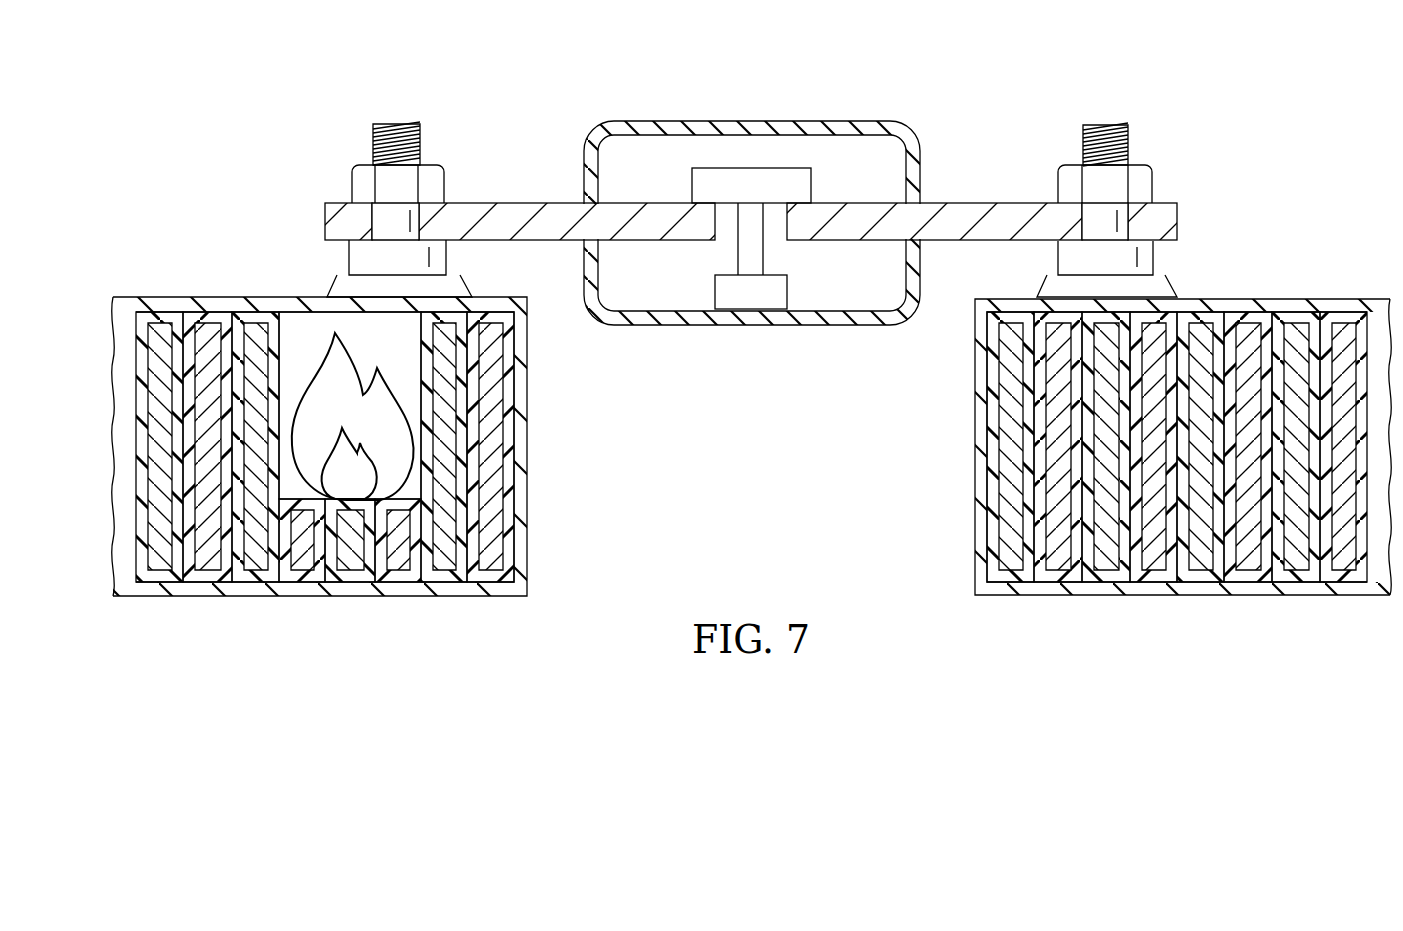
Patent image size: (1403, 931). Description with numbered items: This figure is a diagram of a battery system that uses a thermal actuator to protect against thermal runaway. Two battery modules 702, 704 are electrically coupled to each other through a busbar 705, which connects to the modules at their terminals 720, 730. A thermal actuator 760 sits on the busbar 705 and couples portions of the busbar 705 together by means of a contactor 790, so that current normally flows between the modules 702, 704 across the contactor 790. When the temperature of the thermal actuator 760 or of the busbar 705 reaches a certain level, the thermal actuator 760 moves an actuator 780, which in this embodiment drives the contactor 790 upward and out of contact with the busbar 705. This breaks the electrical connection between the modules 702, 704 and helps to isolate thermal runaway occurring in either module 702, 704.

The module 702 is at (220, 268).
The module 704 is at (1284, 268).
The busbar 705 is at (522, 203).
The terminal 720 is at (395, 124).
The terminal 730 is at (1105, 125).
The thermal actuator 760 is at (698, 103).
The actuator 780 is at (715, 293).
The contactor 790 is at (692, 183).